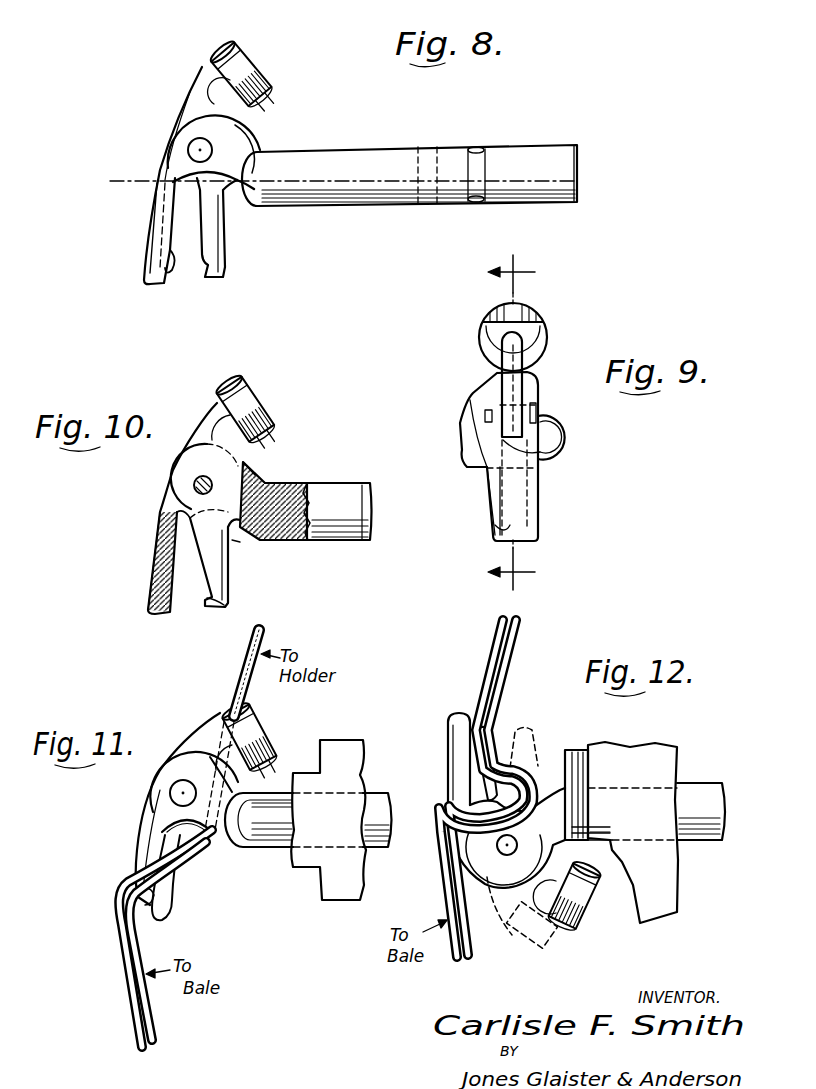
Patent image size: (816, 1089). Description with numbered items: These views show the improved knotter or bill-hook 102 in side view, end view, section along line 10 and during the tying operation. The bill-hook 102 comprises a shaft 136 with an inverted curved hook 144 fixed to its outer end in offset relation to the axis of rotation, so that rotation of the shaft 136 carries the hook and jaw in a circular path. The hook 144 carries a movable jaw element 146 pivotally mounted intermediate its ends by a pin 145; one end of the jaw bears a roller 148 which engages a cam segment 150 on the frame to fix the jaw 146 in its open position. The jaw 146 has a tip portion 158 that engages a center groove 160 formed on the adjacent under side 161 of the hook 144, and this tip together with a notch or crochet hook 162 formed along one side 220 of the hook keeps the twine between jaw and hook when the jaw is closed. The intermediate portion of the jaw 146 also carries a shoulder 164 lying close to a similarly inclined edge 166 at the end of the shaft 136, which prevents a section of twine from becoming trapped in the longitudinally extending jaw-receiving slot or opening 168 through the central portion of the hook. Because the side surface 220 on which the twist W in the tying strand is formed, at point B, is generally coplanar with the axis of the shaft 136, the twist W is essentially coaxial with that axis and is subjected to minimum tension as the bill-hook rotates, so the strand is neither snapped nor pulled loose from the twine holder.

In FIG. 9, the section line 10 is at (526, 422).
In FIG. 8, the bill-hook 102 is at (380, 200).
In FIG. 10, the bill-hook 102 is at (342, 540).
In FIG. 11, the bill-hook 102 is at (272, 792).
In FIG. 12, the bill-hook 102 is at (697, 784).
In FIG. 8, the shaft 136 is at (330, 165).
In FIG. 9, the shaft 136 is at (548, 426).
In FIG. 11, the shaft 136 is at (266, 842).
In FIG. 12, the shaft 136 is at (700, 832).
In FIG. 9, the hook 144 is at (543, 496).
In FIG. 10, the hook 144 is at (160, 514).
In FIG. 11, the hook 144 is at (130, 841).
In FIG. 12, the hook 144 is at (447, 764).
In FIG. 8, the pin 145 is at (188, 150).
In FIG. 8, the movable jaw element 146 is at (226, 248).
In FIG. 10, the movable jaw element 146 is at (229, 590).
In FIG. 11, the movable jaw element 146 is at (175, 880).
In FIG. 12, the movable jaw element 146 is at (488, 732).
In FIG. 8, the roller 148 is at (228, 54).
In FIG. 9, the roller 148 is at (490, 322).
In FIG. 10, the roller 148 is at (276, 420).
In FIG. 11, the roller 148 is at (256, 715).
In FIG. 12, the roller 148 is at (580, 920).
In FIG. 12, the cam segment 150 is at (581, 763).
In FIG. 8, the tip portion 158 is at (208, 280).
In FIG. 10, the tip portion 158 is at (205, 604).
In FIG. 10, the center groove 160 is at (160, 575).
In FIG. 10, the under side 161 is at (182, 578).
In FIG. 8, the notch or crochet hook 162 is at (172, 272).
In FIG. 11, the notch or crochet hook 162 is at (158, 896).
In FIG. 10, the shoulder 164 is at (241, 542).
In FIG. 11, the shoulder 164 is at (214, 845).
In FIG. 10, the inclined edge 166 is at (250, 534).
In FIG. 9, the slot or opening 168 is at (524, 395).
In FIG. 10, the slot or opening 168 is at (248, 464).
In FIG. 8, the side surface 220 is at (157, 216).
In FIG. 9, the side surface 220 is at (540, 478).
In FIG. 9, the point B is at (555, 457).
In FIG. 12, the twist W is at (437, 800).